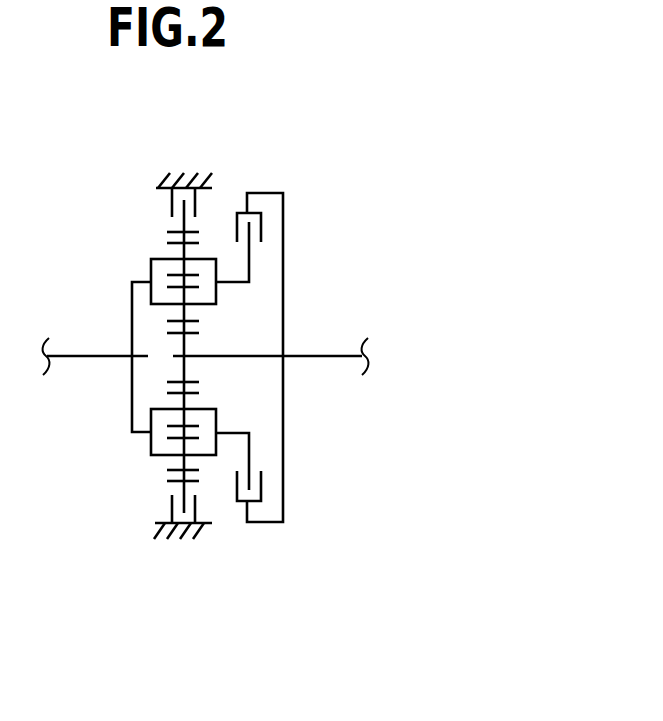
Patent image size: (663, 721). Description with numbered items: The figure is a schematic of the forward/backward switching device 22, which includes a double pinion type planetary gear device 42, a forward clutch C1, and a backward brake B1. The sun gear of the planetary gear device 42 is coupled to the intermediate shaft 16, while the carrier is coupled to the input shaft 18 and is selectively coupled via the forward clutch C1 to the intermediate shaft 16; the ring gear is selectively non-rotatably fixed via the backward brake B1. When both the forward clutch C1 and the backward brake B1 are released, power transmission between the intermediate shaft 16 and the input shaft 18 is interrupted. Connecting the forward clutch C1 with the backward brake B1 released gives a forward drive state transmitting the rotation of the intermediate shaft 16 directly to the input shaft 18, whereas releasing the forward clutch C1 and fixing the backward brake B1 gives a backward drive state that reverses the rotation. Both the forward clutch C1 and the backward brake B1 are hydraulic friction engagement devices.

The forward/backward switching device 22 is at (340, 130).
The double pinion type planetary gear device 42 is at (103, 252).
The input shaft 18 is at (83, 358).
The intermediate shaft 16 is at (328, 358).
The backward brake B1 is at (183, 341).
The forward clutch C1 is at (260, 342).